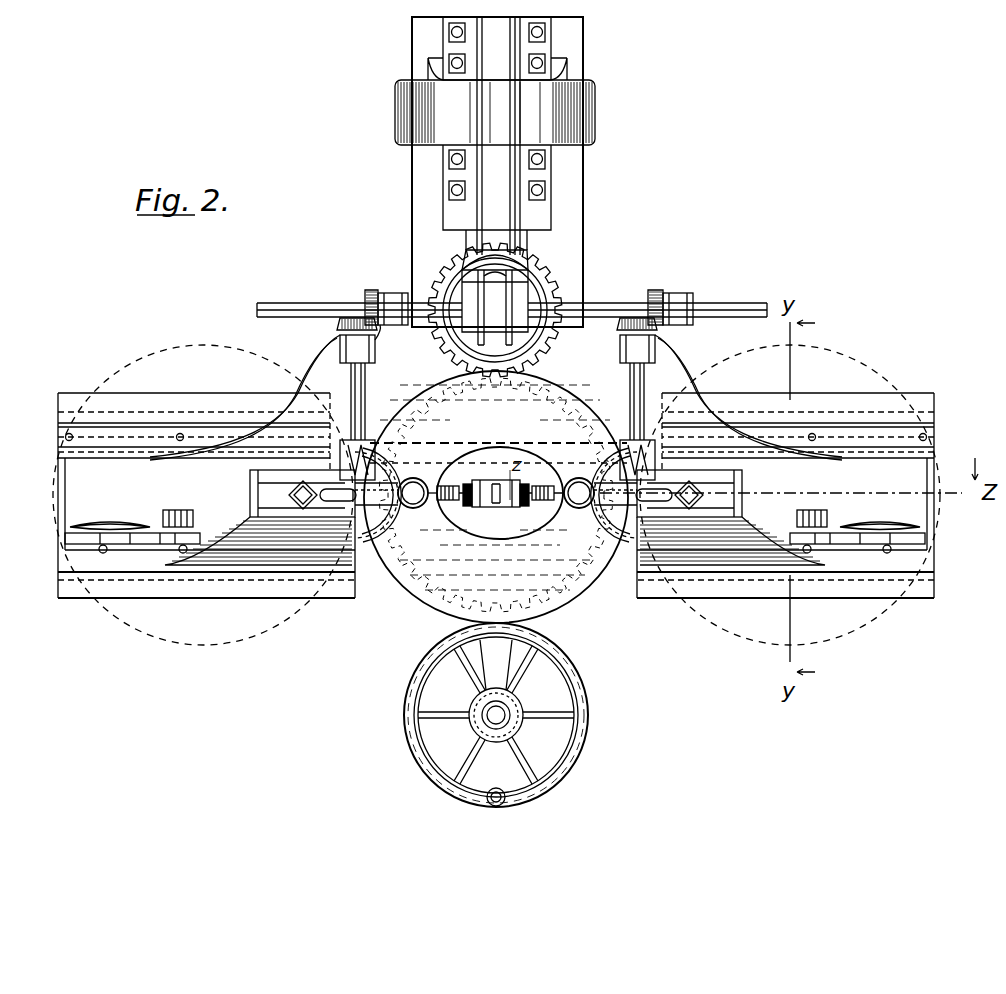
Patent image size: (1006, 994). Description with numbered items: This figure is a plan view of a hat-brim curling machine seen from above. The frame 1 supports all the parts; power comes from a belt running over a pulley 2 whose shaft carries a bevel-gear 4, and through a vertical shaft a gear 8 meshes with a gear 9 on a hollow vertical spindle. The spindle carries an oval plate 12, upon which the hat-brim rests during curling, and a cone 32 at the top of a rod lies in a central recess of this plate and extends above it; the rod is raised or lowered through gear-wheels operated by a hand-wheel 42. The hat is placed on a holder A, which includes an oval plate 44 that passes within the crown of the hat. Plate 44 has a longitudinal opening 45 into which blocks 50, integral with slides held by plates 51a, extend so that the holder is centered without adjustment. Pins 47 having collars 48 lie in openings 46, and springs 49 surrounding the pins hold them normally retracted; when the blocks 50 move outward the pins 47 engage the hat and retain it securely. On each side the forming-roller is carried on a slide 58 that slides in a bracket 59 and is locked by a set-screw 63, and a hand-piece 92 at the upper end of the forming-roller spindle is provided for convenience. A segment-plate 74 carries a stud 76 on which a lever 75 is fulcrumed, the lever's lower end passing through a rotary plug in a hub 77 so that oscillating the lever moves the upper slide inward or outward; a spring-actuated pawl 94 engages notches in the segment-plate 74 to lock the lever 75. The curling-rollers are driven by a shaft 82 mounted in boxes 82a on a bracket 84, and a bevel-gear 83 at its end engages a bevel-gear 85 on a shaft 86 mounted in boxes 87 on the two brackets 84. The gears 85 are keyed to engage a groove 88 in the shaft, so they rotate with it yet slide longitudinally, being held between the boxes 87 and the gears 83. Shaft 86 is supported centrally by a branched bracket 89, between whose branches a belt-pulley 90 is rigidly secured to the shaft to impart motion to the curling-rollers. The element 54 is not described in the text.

The frame 1 is at (576, 196).
The pulley 2 is at (596, 124).
The bevel-gear 4 is at (452, 252).
The gear 8 is at (555, 297).
The gear 9 is at (569, 397).
The oval plate 12 is at (588, 620).
The cone 32 is at (496, 483).
The hand-wheel 42 is at (585, 722).
The oval plate 44 is at (468, 460).
The longitudinal opening 45 is at (468, 483).
The openings 46 is at (544, 486).
The pins 47 is at (466, 507).
The collars 48 is at (446, 485).
The springs 49 is at (540, 510).
The blocks 50 is at (496, 508).
The plates 51a is at (548, 472).
The ring 54 is at (394, 456).
The slide 58 is at (496, 494).
The bracket 59 is at (702, 575).
The bolt or set-screw 63 is at (496, 493).
The segment-plate 74 is at (155, 544).
The lever 75 is at (130, 526).
The stud 76 is at (800, 515).
The hub 77 is at (175, 507).
The shaft 82 is at (351, 392).
The boxes 82a is at (374, 350).
The bevel-gear 83 is at (339, 327).
The bracket 84 is at (496, 479).
The bevel-gear 85 is at (369, 291).
The shaft 86 is at (322, 303).
The boxes 87 is at (393, 293).
The groove 88 is at (738, 303).
The bracket 89 is at (520, 255).
The belt-pulley 90 is at (495, 297).
The hand-piece 92 is at (496, 493).
The spring-actuated pawl 94 is at (103, 553).
The holder A is at (512, 452).